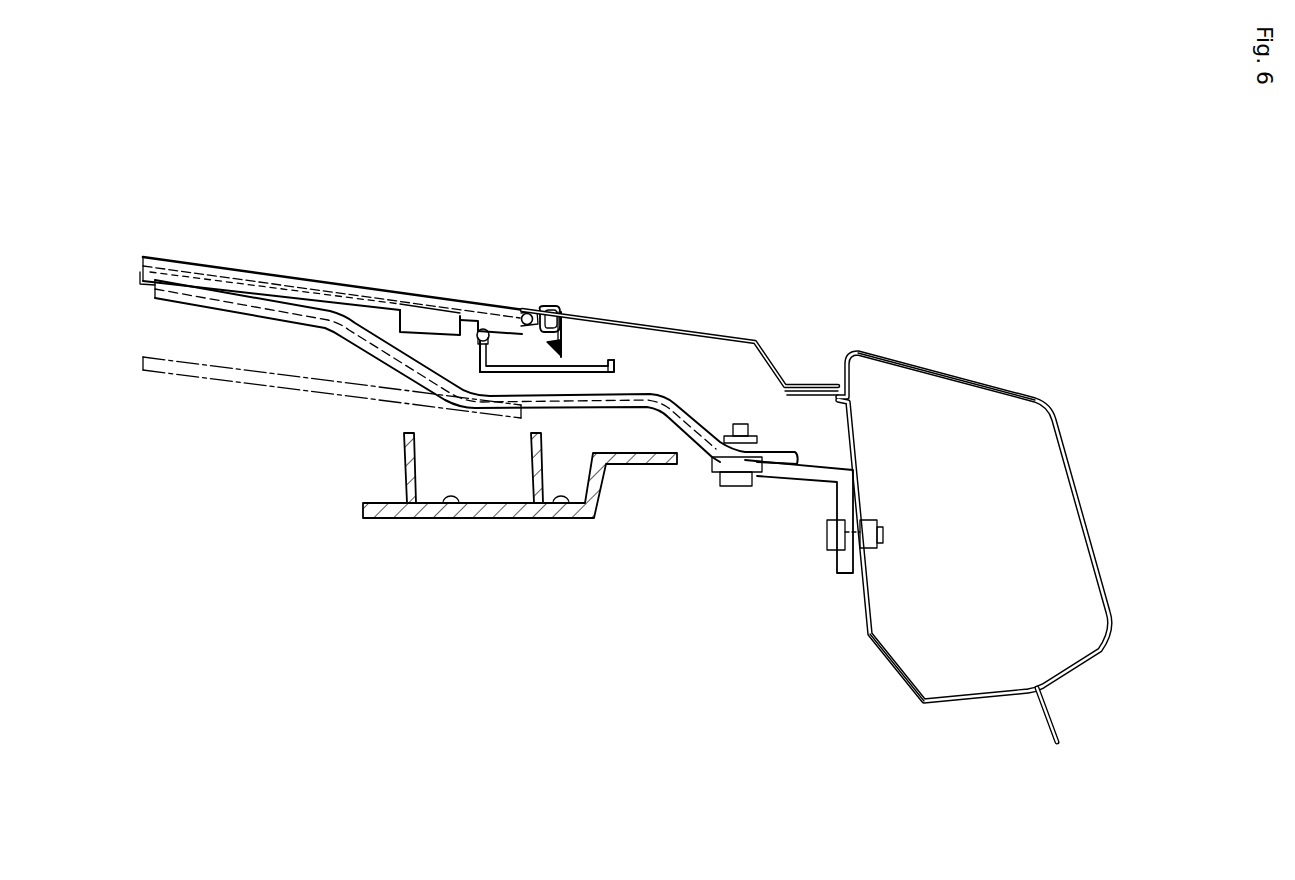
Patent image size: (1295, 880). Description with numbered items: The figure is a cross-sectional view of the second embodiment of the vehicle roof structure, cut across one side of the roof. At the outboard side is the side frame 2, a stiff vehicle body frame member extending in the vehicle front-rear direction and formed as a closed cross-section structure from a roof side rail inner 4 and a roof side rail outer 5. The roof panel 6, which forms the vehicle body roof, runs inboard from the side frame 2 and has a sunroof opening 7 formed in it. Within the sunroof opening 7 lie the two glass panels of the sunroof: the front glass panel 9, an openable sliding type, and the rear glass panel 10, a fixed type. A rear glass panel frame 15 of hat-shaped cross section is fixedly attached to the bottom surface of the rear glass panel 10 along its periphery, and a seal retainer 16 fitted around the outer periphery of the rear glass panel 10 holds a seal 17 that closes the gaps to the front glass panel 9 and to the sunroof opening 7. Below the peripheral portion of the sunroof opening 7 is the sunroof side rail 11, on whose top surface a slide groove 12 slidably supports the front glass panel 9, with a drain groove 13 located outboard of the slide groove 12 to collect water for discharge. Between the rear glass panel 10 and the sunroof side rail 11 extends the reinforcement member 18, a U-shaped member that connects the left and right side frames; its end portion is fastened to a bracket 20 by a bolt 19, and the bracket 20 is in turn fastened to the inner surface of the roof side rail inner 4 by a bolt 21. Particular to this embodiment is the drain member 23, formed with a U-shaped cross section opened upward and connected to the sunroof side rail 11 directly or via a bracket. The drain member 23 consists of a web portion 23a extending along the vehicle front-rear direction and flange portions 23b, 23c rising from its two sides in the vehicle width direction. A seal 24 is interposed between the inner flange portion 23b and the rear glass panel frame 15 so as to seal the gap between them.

The side frame 2 is at (909, 348).
The roof side rail inner 4 is at (893, 676).
The roof side rail outer 5 is at (963, 372).
The roof panel 6 is at (705, 330).
The sunroof opening 7 is at (565, 345).
The front glass panel 9 is at (240, 392).
The rear glass panel 10 is at (285, 277).
The sunroof side rail 11 is at (380, 472).
The slide groove 12 is at (451, 502).
The drain groove 13 is at (561, 502).
The rear glass panel frame 15 is at (432, 300).
The seal retainer 16 is at (525, 311).
The seal 17 is at (552, 306).
The reinforcement member 18 is at (370, 348).
The bolt 19 is at (735, 488).
The bracket 20 is at (783, 480).
The bolt 21 is at (830, 548).
The drain member 23 is at (596, 358).
The web portion 23a is at (580, 372).
The flange portion 23b is at (478, 352).
The flange portion 23c is at (618, 373).
The seal 24 is at (481, 328).